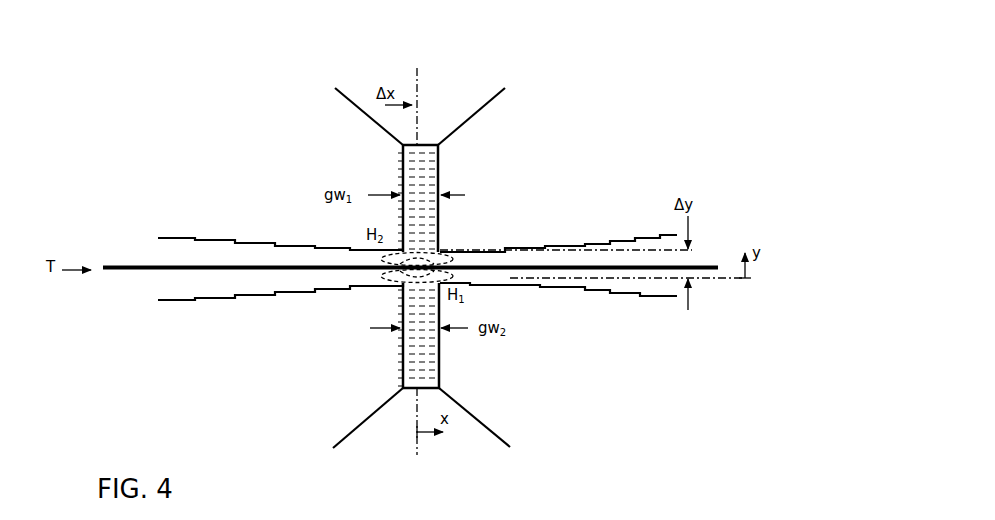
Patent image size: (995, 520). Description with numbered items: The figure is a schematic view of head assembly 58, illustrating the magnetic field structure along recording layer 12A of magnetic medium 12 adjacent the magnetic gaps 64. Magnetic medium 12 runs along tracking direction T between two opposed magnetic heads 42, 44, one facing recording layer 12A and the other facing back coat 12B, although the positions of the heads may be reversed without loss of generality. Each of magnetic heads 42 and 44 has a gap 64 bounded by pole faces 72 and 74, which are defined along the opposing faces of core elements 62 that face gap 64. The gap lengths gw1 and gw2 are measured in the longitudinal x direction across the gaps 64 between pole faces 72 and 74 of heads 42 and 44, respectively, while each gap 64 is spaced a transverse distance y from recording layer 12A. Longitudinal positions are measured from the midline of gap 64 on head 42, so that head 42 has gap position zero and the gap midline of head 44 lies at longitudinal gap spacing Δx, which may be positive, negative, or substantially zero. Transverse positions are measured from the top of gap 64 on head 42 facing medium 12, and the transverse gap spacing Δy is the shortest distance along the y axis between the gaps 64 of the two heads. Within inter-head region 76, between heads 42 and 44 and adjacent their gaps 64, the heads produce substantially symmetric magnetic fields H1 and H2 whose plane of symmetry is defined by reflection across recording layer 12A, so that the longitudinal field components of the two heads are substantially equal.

The magnetic medium 12 is at (110, 279).
The recording layer 12A is at (128, 266).
The back coat 12B is at (137, 270).
The magnetic head 42 is at (652, 396).
The magnetic head 44 is at (640, 162).
The head assembly 58 is at (122, 85).
The core elements 62 is at (258, 156).
The magnetic gap 64 is at (426, 145).
The pole face 72 is at (402, 165).
The pole face 74 is at (439, 167).
The inter-head region 76 is at (466, 259).